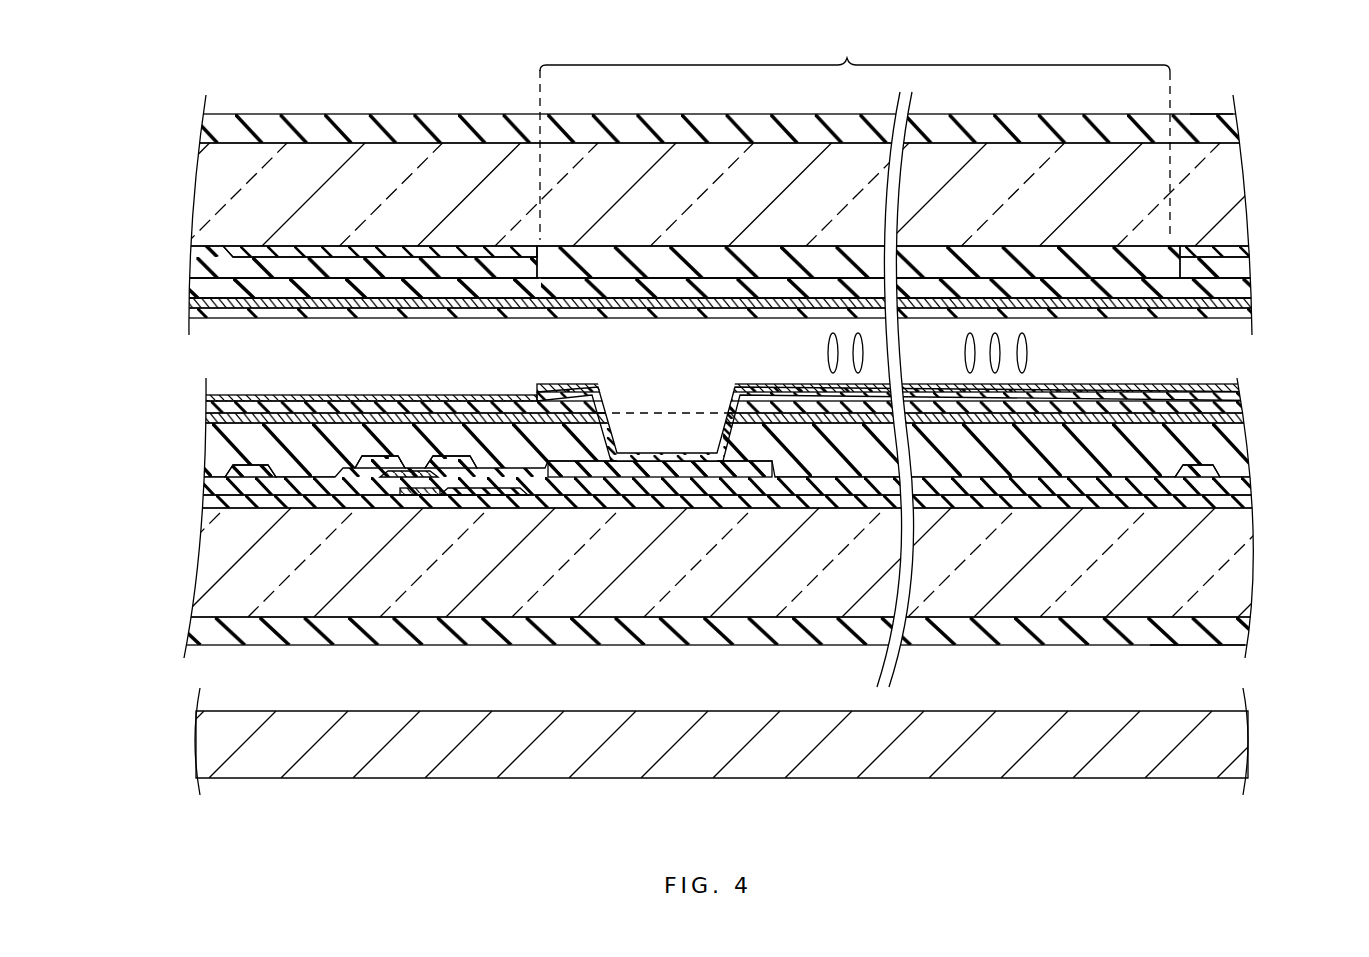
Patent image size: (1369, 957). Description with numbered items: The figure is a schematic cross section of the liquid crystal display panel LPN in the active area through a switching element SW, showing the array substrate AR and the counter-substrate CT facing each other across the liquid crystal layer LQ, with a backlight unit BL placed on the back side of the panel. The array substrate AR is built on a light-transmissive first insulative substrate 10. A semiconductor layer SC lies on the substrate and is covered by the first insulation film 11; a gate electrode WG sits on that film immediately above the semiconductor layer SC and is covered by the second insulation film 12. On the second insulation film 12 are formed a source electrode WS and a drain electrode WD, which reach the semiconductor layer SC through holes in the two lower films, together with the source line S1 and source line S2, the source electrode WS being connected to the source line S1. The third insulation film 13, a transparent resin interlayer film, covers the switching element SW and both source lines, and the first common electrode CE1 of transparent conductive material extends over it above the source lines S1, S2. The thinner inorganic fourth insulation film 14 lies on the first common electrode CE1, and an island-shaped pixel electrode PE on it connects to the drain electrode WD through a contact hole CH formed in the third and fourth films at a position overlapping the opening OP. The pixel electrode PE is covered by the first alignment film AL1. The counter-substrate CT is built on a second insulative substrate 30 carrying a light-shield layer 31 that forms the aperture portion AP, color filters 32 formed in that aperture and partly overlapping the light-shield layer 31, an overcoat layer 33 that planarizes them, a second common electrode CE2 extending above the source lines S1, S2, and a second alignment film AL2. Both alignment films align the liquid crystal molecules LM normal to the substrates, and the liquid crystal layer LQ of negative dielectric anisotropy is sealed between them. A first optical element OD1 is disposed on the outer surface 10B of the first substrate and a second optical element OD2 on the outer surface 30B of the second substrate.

The aperture portion AP is at (855, 136).
The outer surface of second insulative substrate 30B is at (1204, 134).
The second optical element OD2 is at (1222, 118).
The liquid crystal display panel LPN is at (1249, 176).
The counter-substrate CT is at (1232, 222).
The second insulative substrate 30 is at (215, 190).
The light-shield layer 31 is at (222, 251).
The color filters 32 is at (212, 270).
The overcoat layer 33 is at (208, 292).
The second common electrode CE2 is at (1180, 310).
The second alignment film AL2 is at (202, 317).
The liquid crystal layer LQ is at (213, 353).
The liquid crystal molecules LM is at (1028, 353).
The first alignment film AL1 is at (225, 396).
The pixel electrode PE is at (736, 392).
The fourth insulation film 14 is at (222, 407).
The first common electrode CE1 is at (1165, 412).
The third insulation film 13 is at (230, 455).
The second insulation film 12 is at (220, 488).
The first insulation film 11 is at (225, 505).
The first insulative substrate 10 is at (225, 591).
The first optical element OD1 is at (1237, 635).
The outer surface of first insulative substrate 10B is at (1186, 629).
The array substrate AR is at (1262, 553).
The source line S1 is at (243, 480).
The source line S2 is at (1200, 467).
The source electrode WS is at (372, 464).
The drain electrode WD is at (498, 463).
The switching element SW is at (396, 516).
The semiconductor layer SC is at (420, 497).
The gate electrode WG is at (456, 480).
The opening OP is at (632, 400).
The contact hole CH is at (672, 410).
The backlight unit BL is at (1240, 756).